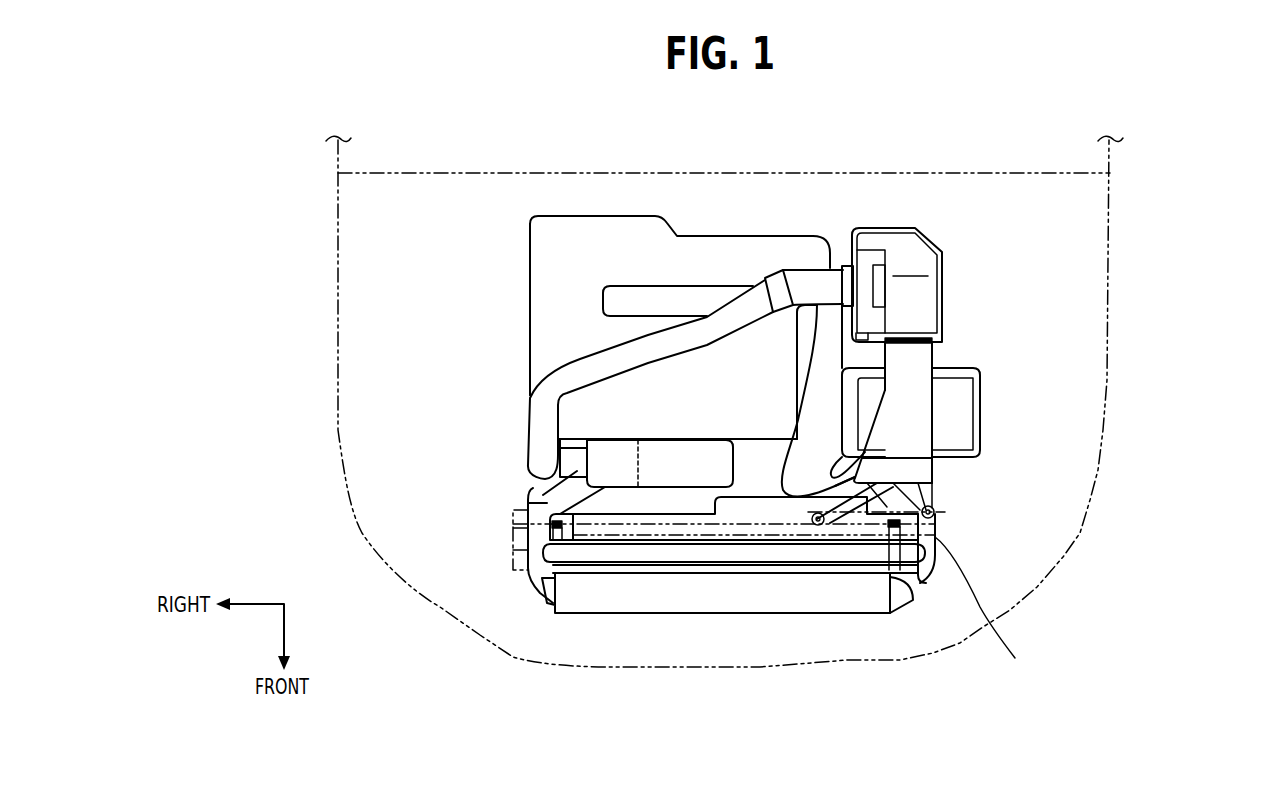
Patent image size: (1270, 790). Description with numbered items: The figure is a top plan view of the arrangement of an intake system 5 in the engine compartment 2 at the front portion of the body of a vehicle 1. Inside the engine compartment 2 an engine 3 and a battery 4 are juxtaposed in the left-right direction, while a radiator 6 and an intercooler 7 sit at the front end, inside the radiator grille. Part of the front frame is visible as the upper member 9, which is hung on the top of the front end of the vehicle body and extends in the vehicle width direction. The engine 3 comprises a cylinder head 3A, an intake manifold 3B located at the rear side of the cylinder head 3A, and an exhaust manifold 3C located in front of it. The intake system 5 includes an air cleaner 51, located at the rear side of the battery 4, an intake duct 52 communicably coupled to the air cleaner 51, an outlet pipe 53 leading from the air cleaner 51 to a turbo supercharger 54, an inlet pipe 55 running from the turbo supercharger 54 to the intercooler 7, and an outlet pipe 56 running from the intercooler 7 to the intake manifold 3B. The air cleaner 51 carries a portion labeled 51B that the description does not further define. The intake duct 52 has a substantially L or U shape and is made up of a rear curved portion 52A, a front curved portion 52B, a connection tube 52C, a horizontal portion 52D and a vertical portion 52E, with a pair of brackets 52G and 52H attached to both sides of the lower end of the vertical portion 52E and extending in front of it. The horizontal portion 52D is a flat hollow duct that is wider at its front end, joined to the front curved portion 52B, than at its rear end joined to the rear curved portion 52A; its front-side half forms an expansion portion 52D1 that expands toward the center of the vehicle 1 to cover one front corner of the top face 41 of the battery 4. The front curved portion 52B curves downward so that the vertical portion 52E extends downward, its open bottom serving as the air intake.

The vehicle 1 is at (1194, 250).
The engine compartment 2 is at (1035, 212).
The engine 3 is at (531, 276).
The cylinder head 3A is at (558, 317).
The intake manifold 3B is at (690, 297).
The exhaust manifold 3C is at (682, 452).
The battery 4 is at (976, 407).
The top face 41 is at (957, 395).
The intake system 5 is at (958, 279).
The air cleaner 51 is at (901, 229).
The connector body 51B is at (915, 250).
The intake duct 52 is at (933, 450).
The rear curved portion 52A is at (918, 354).
The front curved portion 52B is at (907, 462).
The connection tube 52C is at (908, 343).
The horizontal portion 52D is at (933, 430).
The expansion portion 52D1 is at (825, 446).
The vertical portion 52E is at (935, 495).
The bracket 52G is at (850, 530).
The bracket 52H is at (935, 537).
The outlet pipe 53 is at (648, 347).
The turbo supercharger 54 is at (613, 447).
The inlet pipe 55 is at (533, 488).
The outlet pipe 56 is at (798, 354).
The radiator 6 is at (723, 553).
The intercooler 7 is at (773, 603).
The upper member 9 is at (983, 609).